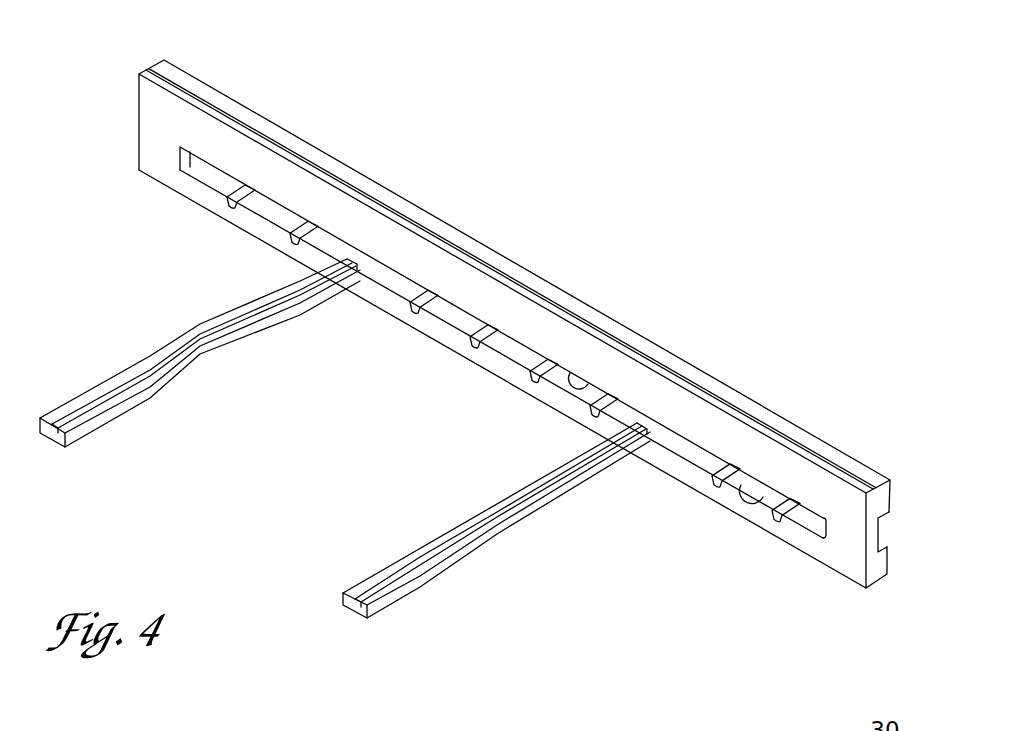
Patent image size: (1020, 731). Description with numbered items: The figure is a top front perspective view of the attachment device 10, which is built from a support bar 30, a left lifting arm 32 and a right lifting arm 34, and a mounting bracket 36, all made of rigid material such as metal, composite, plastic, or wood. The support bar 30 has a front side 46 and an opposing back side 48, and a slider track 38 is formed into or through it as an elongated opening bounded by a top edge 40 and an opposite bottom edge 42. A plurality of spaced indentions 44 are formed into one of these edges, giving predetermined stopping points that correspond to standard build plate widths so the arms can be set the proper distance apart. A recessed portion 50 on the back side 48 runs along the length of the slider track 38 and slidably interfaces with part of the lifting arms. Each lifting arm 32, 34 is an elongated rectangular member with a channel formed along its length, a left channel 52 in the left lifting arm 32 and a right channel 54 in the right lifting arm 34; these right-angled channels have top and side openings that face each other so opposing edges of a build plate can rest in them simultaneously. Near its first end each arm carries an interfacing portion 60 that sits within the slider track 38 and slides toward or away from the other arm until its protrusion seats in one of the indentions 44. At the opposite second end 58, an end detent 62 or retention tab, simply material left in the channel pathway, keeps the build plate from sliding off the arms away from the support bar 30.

The attachment device 10 is at (649, 193).
The support bar 30 is at (148, 116).
The left lifting arm 32 is at (468, 563).
The right lifting arm 34 is at (87, 400).
The mounting bracket 36 is at (220, 93).
The slider track 38 is at (455, 312).
The top edge 40 is at (600, 386).
The bottom edge 42 is at (763, 496).
The indentions 44 is at (228, 206).
The front side 46 is at (845, 550).
The back side 48 is at (888, 563).
The recessed portion 50 is at (878, 538).
The left channel 52 is at (491, 512).
The right channel 54 is at (180, 367).
The second end 58 is at (43, 442).
The interfacing portion 60 is at (383, 268).
The end detent 62 is at (96, 427).